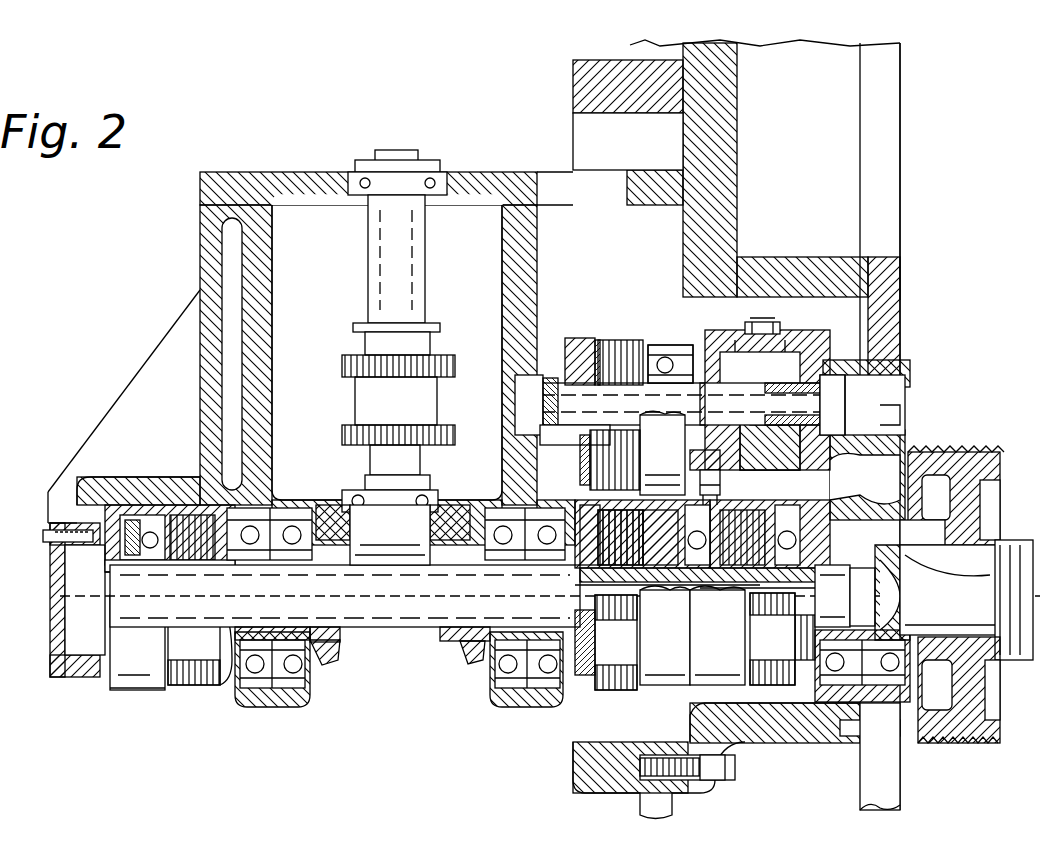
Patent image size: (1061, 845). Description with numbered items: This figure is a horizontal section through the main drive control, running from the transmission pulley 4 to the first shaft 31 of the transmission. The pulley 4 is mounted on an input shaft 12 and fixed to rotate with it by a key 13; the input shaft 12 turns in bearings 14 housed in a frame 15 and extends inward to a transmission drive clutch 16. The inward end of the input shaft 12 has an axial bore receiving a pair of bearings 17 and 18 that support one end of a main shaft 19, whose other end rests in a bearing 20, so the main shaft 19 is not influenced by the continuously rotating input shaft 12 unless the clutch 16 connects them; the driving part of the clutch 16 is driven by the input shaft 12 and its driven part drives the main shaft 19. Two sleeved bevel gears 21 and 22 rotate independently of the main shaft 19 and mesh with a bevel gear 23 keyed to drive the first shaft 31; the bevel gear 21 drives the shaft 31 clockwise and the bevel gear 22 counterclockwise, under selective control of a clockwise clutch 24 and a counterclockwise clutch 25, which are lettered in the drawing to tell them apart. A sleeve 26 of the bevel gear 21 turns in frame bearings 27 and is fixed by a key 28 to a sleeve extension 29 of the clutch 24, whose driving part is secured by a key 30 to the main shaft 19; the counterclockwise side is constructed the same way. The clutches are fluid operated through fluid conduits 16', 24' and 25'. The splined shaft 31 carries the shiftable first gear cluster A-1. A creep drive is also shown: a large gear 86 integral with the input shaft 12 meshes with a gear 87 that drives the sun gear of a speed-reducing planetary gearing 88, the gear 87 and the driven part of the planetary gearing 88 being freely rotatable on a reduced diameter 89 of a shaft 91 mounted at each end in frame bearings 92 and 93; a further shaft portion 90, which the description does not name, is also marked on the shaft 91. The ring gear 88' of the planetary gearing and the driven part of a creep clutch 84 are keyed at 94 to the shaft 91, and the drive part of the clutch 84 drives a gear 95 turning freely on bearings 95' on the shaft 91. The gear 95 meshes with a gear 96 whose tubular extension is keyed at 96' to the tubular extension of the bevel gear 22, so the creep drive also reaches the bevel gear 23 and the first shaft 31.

The pulley 4 is at (945, 462).
The input shaft 12 is at (972, 603).
The key 13 is at (928, 555).
The bearings 14 is at (827, 690).
The frame 15 is at (905, 705).
The transmission drive clutch 16 is at (736, 759).
The fluid conduit 16' is at (702, 477).
The bearing 17 is at (856, 603).
The bearing 18 is at (835, 598).
The main shaft 19 is at (462, 606).
The bearing 20 is at (85, 630).
The sleeved bevel gear 21 is at (330, 658).
The sleeved bevel gear 22 is at (462, 650).
The bevel gear 23 is at (440, 540).
The clockwise clutch 24 is at (183, 668).
The fluid conduit 24' is at (170, 507).
The counterclockwise clutch 25 is at (606, 663).
The fluid conduit 25' is at (628, 460).
The sleeve 26 is at (290, 640).
The frame bearings 27 is at (273, 692).
The key 28 is at (262, 560).
The sleeve extension 29 is at (325, 630).
The key 30 is at (118, 555).
The first shaft 31 is at (408, 466).
The first gear cluster A-1 is at (428, 395).
The creep clutch 84 is at (623, 326).
The large gear 86 is at (805, 636).
The gear 87 is at (805, 345).
The planetary gearing 88 is at (781, 315).
The ring gear 88' is at (750, 386).
The reduced diameter 89 is at (757, 423).
The spline 90 is at (760, 425).
The shaft 91 is at (722, 423).
The bearing 92 is at (515, 395).
The bearing 93 is at (830, 400).
The key 94 is at (672, 388).
The gear 95 is at (629, 333).
The bearings 95' is at (575, 423).
The gear 96 is at (629, 526).
The key 96' is at (525, 555).